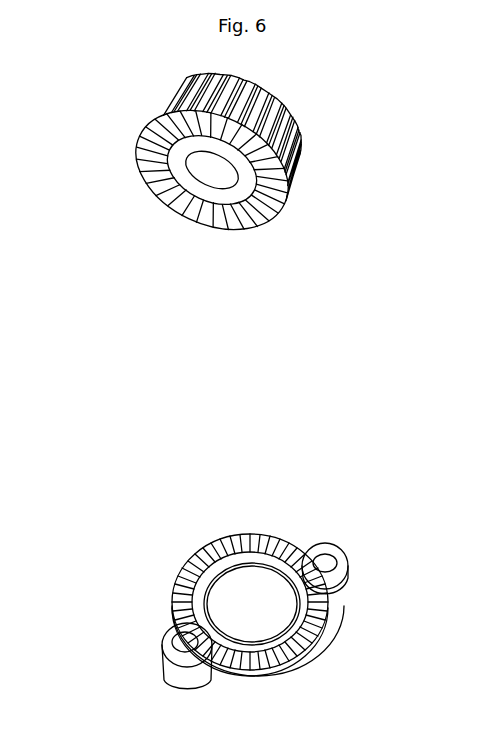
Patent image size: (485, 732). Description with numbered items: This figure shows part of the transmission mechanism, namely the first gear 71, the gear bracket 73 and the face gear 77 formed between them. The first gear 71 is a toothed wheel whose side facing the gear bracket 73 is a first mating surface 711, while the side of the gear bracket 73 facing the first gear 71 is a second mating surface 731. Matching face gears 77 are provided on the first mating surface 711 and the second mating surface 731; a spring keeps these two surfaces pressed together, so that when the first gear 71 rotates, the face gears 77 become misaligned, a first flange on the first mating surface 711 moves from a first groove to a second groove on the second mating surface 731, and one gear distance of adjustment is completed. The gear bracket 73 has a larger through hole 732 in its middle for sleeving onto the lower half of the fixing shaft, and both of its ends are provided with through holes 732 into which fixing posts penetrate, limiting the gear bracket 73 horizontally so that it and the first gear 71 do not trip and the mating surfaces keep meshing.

The face gear 77 is at (234, 534).
The first gear 71 is at (284, 136).
The first mating surface 711 is at (390, 273).
The gear bracket 73 is at (197, 563).
The second mating surface 731 is at (296, 654).
The through hole 732 is at (324, 562).